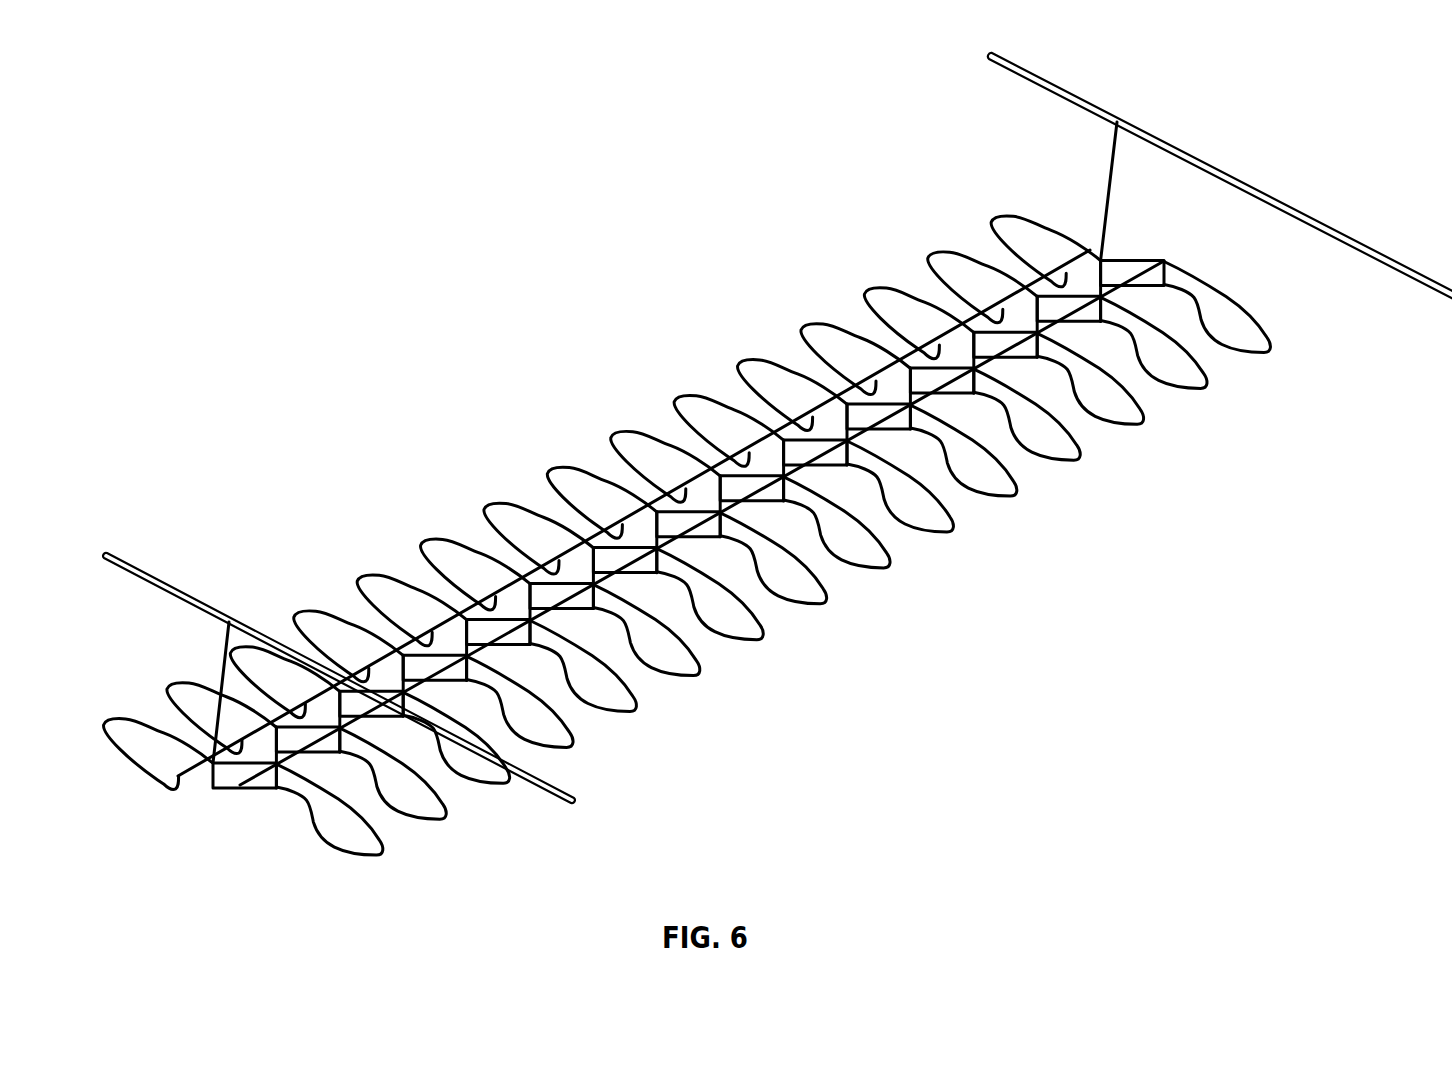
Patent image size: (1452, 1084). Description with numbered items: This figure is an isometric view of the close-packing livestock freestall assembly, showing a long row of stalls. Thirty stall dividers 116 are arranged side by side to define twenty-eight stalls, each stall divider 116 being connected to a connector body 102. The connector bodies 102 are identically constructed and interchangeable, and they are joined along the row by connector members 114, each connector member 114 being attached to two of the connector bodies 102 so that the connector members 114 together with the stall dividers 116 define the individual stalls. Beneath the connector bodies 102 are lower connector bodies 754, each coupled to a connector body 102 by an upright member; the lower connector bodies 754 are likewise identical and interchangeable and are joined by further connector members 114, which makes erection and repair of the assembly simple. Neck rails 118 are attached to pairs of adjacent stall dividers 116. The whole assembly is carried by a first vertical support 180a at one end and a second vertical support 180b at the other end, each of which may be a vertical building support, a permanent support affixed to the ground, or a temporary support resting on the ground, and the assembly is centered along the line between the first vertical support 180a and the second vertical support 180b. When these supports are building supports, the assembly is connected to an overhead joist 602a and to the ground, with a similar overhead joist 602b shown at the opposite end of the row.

The overhead joist 602a is at (130, 562).
The second rail 602b is at (1072, 90).
The first vertical support 180a is at (225, 657).
The second vertical support 180b is at (1112, 140).
The connector body 102 is at (1105, 262).
The connector member 114 is at (1151, 258).
The stall divider 116 is at (1024, 220).
The neck rail 118 is at (1059, 267).
The lower connector body 754 is at (1176, 267).